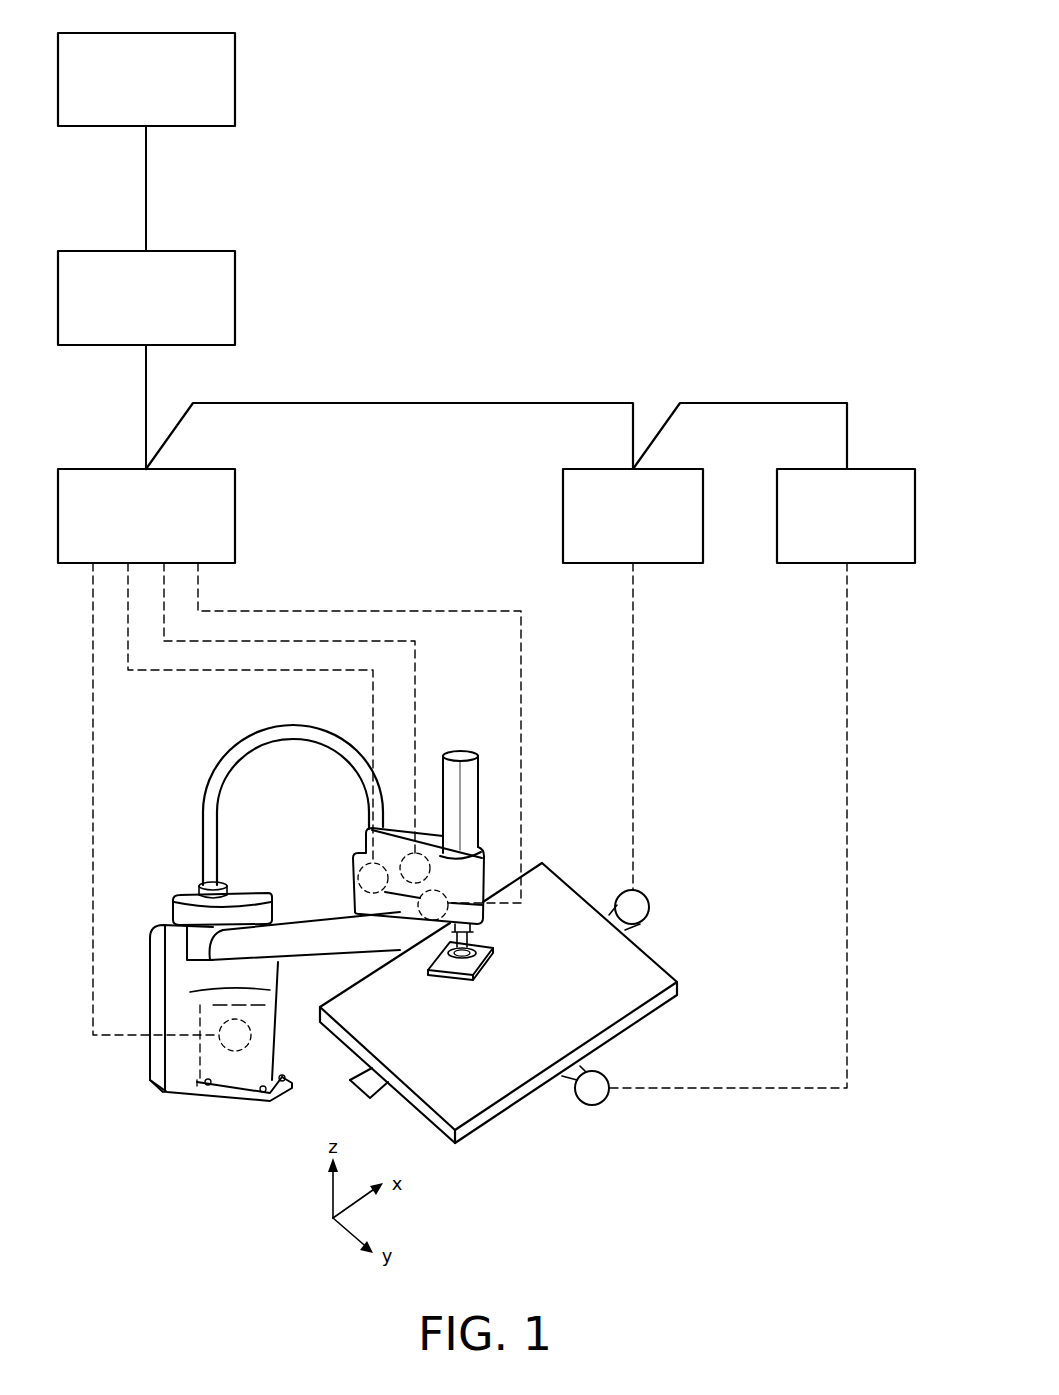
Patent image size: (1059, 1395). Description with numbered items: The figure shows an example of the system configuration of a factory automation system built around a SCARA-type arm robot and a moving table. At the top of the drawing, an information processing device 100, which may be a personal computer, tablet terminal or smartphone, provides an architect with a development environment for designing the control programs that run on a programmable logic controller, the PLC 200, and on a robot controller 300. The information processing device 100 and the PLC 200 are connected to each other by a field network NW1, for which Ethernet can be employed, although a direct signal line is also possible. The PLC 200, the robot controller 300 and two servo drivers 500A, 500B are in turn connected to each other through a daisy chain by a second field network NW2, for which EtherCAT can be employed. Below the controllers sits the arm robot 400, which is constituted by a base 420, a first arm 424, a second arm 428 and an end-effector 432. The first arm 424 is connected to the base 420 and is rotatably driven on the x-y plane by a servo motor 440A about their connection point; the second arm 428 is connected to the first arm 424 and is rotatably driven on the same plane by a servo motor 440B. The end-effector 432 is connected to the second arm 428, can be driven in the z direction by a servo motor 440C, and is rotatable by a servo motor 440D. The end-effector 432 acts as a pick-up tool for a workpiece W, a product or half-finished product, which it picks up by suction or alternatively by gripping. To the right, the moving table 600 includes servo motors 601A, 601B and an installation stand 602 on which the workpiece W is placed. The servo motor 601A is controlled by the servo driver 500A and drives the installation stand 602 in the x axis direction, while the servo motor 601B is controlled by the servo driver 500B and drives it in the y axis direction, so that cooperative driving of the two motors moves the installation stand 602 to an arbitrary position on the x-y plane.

The information processing device 100 is at (190, 32).
The field network NW1 is at (150, 186).
The programmable logic controller (PLC) 200 is at (190, 250).
The field network NW2 is at (410, 402).
The robot controller 300 is at (190, 468).
The servo driver 500A is at (680, 468).
The servo driver 500B is at (893, 468).
The arm robot 400 is at (168, 885).
The base 420 is at (155, 967).
The first arm 424 is at (307, 920).
The second arm 428 is at (425, 840).
The end-effector 432 is at (493, 958).
The workpiece W is at (485, 945).
The servo motor 440A is at (237, 1052).
The servo motor 440B is at (357, 865).
The servo motor 440C is at (467, 867).
The servo motor 440D is at (427, 915).
The moving table 600 is at (528, 969).
The servo motor 601A is at (647, 893).
The servo motor 601B is at (602, 1105).
The installation stand 602 is at (500, 1113).